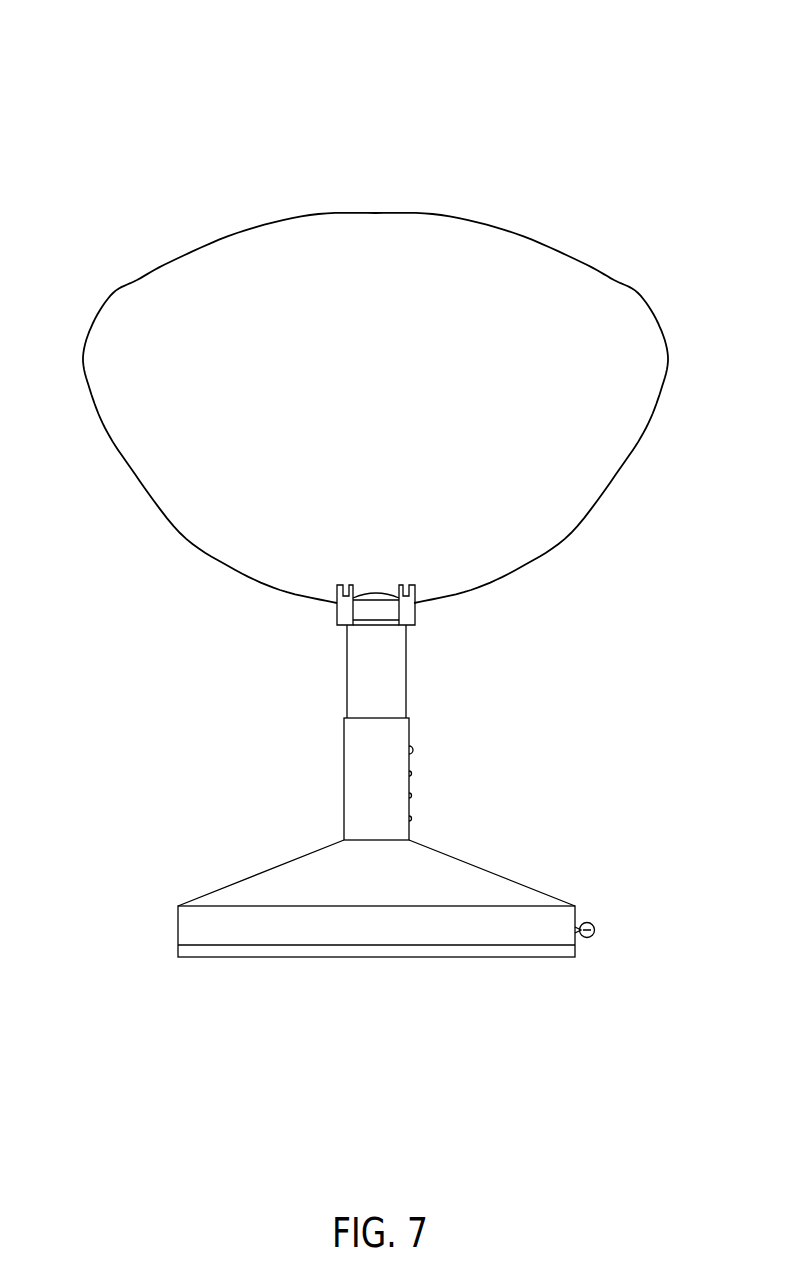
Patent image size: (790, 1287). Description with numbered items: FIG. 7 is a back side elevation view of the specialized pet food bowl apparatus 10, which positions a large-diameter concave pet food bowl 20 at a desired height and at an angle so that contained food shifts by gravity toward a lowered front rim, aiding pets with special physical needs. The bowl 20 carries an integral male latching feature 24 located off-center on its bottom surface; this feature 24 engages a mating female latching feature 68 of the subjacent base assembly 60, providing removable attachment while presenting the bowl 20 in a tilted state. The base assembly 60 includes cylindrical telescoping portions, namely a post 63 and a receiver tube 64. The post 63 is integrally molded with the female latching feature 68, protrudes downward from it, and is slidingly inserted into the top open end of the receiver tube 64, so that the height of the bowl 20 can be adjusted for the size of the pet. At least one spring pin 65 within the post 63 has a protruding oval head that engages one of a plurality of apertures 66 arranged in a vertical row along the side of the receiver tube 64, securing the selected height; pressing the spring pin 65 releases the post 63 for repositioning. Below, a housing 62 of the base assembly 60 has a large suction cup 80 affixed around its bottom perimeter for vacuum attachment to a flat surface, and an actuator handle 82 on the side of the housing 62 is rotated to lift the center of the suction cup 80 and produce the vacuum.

The specialized pet food bowl apparatus 10 is at (400, 176).
The pet food bowl 20 is at (115, 290).
The male latching feature 24 is at (374, 607).
The base assembly 60 is at (346, 719).
The housing 62 is at (177, 918).
The post 63 is at (398, 697).
The receiver tube 64 is at (346, 766).
The spring pin 65 is at (415, 750).
The apertures 66 is at (410, 818).
The female latching feature 68 is at (341, 613).
The suction cup 80 is at (465, 958).
The actuator handle 82 is at (596, 936).